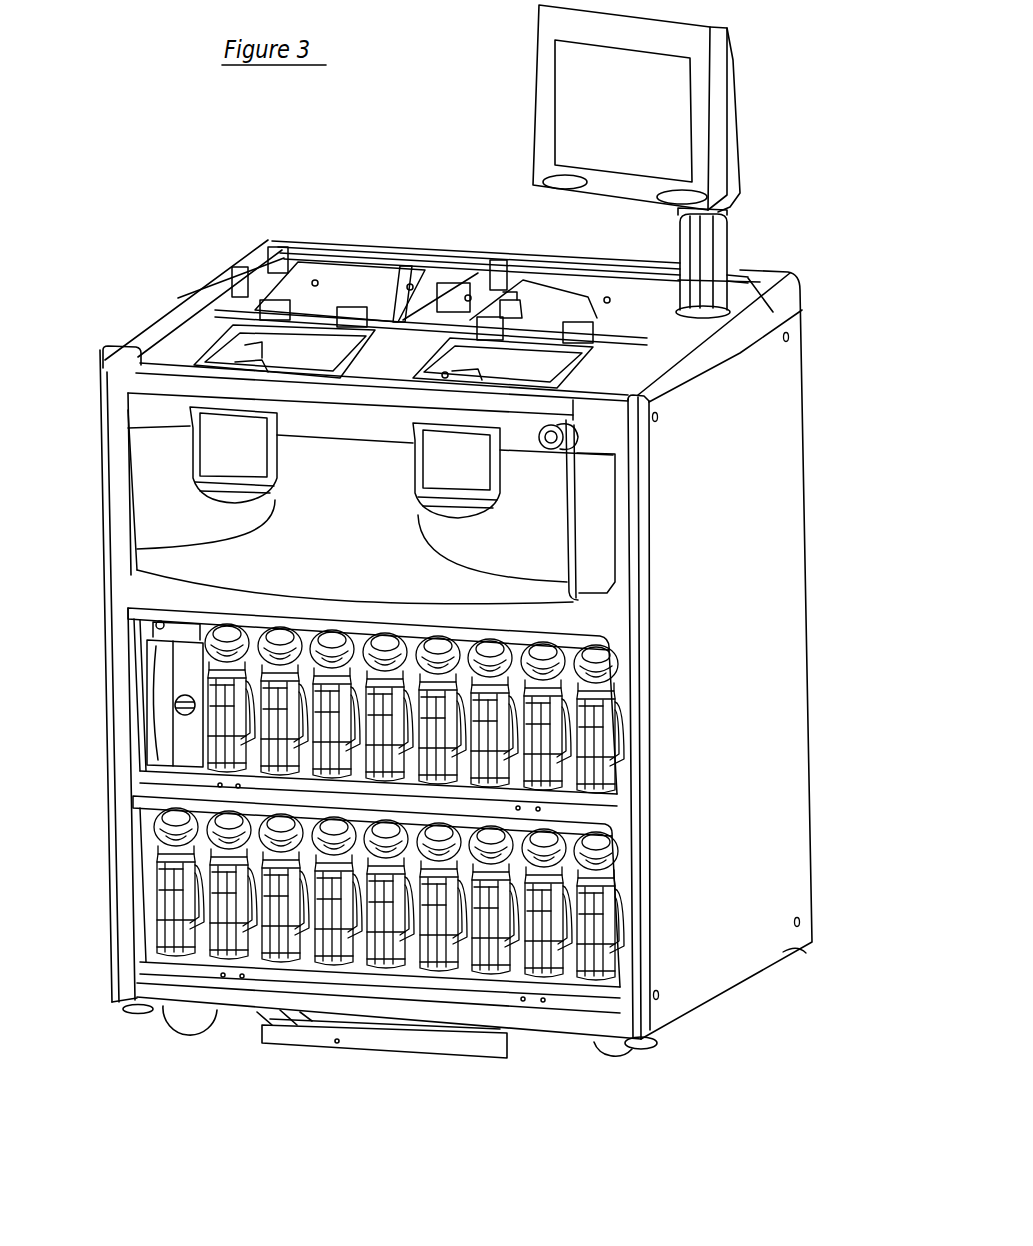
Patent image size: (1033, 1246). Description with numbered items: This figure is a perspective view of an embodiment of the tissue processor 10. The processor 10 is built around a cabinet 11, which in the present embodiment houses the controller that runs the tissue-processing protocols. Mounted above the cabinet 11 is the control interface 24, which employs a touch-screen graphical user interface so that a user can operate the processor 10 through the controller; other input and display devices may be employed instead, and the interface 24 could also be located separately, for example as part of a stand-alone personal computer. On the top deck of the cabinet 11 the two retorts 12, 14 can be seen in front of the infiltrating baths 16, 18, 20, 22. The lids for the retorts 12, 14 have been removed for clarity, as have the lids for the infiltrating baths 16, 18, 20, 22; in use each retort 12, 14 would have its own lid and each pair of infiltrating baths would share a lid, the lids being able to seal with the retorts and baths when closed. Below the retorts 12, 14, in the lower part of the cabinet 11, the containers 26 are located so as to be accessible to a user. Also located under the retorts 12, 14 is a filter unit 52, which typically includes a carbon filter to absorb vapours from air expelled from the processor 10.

The processor 10 is at (474, 663).
The cabinet 11 is at (713, 887).
The retort 12 is at (255, 343).
The retort 14 is at (552, 368).
The infiltrating bath 16 is at (327, 277).
The infiltrating bath 18 is at (407, 270).
The infiltrating bath 20 is at (520, 295).
The infiltrating bath 22 is at (613, 318).
The control interface 24 is at (660, 110).
The containers 26 is at (600, 747).
The filter unit 52 is at (172, 730).